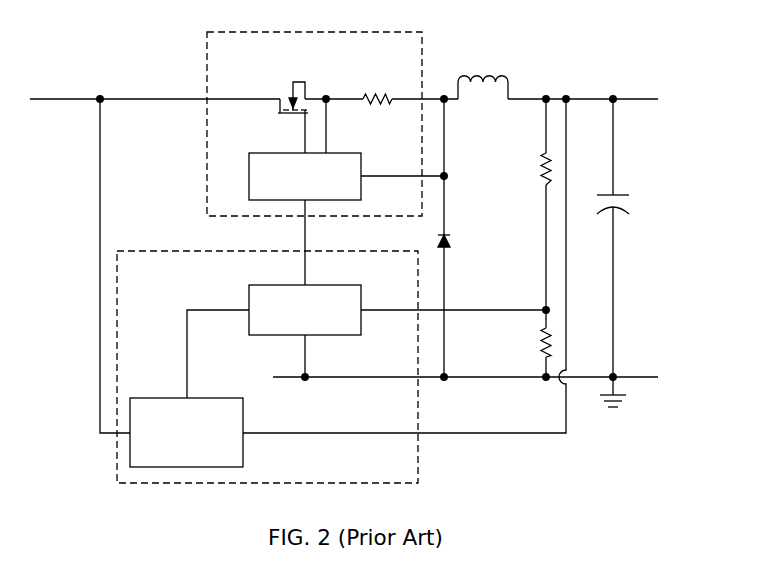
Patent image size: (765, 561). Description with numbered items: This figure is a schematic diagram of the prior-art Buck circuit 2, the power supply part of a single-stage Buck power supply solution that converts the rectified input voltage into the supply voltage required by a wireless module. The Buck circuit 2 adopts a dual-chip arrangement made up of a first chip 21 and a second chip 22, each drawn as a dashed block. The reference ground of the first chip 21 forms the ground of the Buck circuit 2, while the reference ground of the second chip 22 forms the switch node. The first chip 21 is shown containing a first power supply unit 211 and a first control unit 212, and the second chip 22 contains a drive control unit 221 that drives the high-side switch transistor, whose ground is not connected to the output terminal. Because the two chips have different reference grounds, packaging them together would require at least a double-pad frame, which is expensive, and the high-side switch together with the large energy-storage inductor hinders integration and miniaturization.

The Buck circuit 2 is at (578, 35).
The first chip 21 is at (146, 308).
The second chip 22 is at (235, 80).
The first power supply unit 211 is at (200, 461).
The first control unit 212 is at (337, 330).
The drive control unit 221 is at (335, 195).